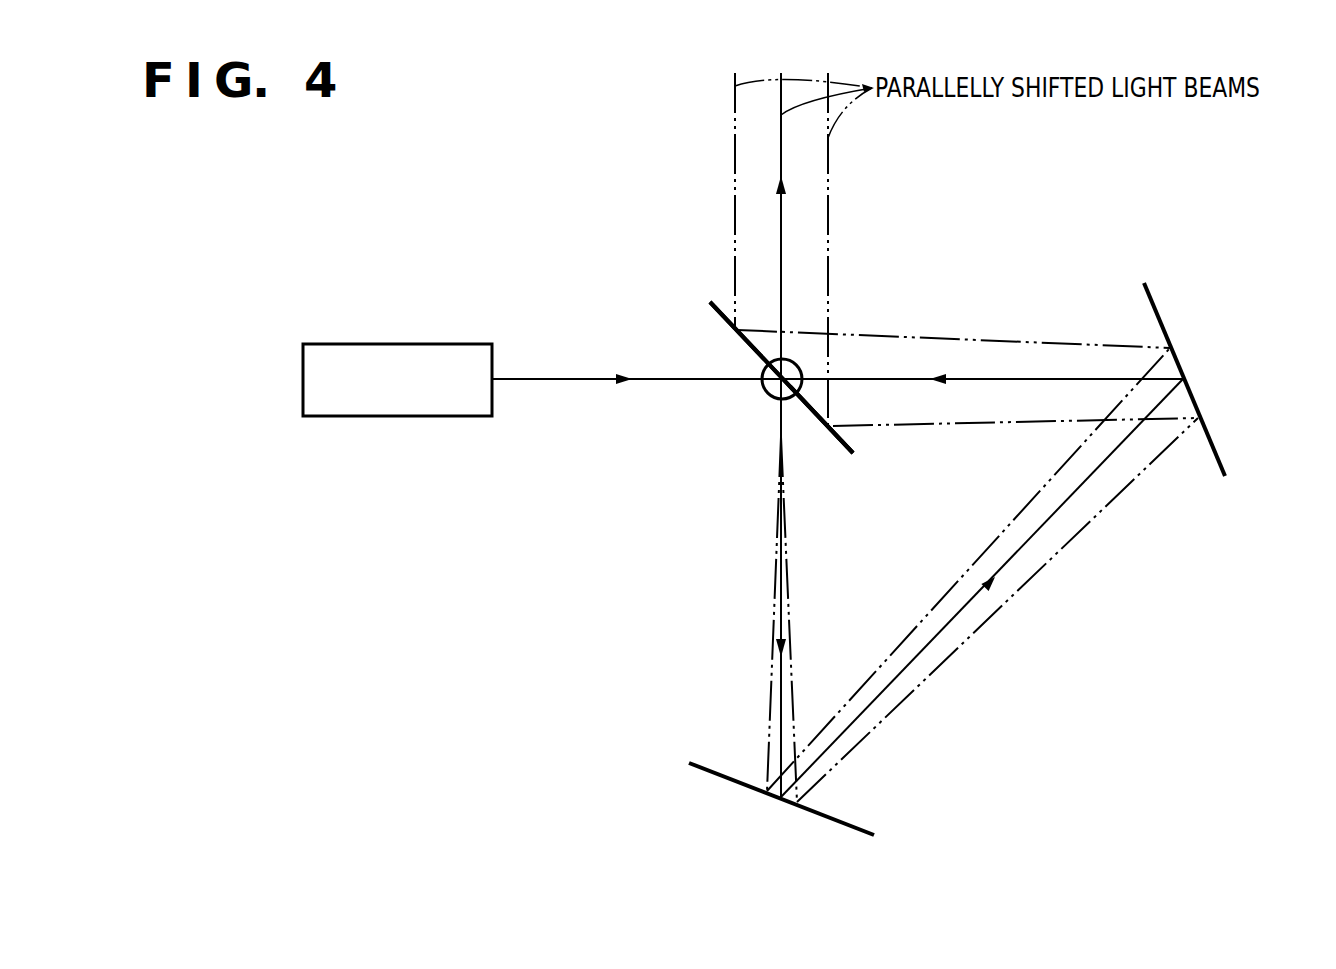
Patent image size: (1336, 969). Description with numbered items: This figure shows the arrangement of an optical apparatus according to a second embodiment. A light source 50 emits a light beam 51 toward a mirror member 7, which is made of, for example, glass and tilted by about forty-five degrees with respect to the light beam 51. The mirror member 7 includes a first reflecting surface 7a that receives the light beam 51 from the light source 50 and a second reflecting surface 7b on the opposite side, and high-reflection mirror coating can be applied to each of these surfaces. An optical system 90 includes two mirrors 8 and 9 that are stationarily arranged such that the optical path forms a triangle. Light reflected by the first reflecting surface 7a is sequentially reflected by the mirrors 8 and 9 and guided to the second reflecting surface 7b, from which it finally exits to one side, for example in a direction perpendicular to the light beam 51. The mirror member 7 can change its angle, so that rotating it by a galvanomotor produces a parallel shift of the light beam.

The light source 50 is at (448, 343).
The light beam 51 is at (563, 382).
The mirror member 7 is at (820, 414).
The first reflecting surface 7a is at (831, 437).
The second reflecting surface 7b is at (852, 444).
The mirror 8 is at (838, 826).
The mirror 9 is at (1218, 447).
The optical system 90 is at (938, 817).